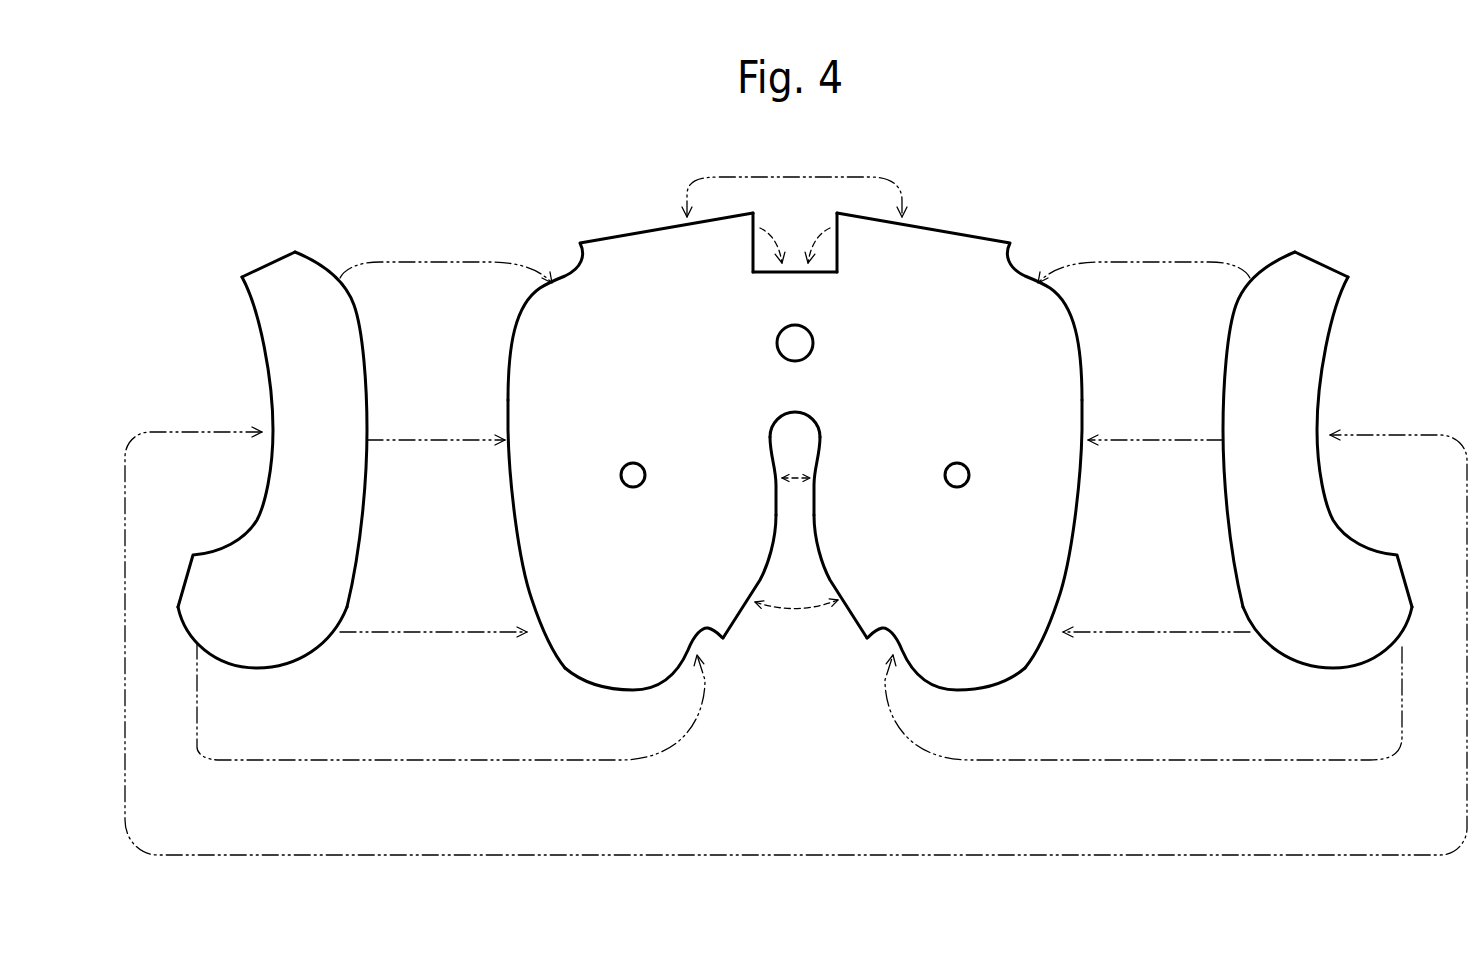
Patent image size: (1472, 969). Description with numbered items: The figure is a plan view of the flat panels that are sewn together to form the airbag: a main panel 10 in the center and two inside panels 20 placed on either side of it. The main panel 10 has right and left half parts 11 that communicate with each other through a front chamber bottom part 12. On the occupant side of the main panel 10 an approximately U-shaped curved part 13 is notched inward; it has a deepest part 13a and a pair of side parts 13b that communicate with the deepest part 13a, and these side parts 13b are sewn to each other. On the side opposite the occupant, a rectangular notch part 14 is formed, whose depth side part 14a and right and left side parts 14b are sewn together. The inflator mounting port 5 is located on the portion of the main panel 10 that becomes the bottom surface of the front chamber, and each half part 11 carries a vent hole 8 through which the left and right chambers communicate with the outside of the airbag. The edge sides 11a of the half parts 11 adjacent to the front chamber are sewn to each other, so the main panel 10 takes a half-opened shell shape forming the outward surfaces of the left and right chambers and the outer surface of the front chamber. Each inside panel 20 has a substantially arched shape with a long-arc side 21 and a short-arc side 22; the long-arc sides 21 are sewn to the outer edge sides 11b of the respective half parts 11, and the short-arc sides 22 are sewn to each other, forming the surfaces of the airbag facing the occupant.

The inflator mounting port 5 is at (805, 340).
The vent holes 8 is at (636, 463).
The main panel 10 is at (952, 197).
The half parts 11 is at (540, 526).
The edge sides 11a is at (627, 233).
The outer edge sides 11b is at (508, 478).
The front chamber bottom part 12 is at (800, 380).
The curved part 13 is at (768, 550).
The deepest part 13a is at (790, 413).
The side parts 13b is at (777, 495).
The notch part 14 is at (800, 220).
The depth side part 14a is at (793, 272).
The side parts of the notch part 14b is at (753, 250).
The inside panels 20 is at (305, 228).
The long-arc side 21 is at (367, 477).
The short-arc side 22 is at (272, 467).